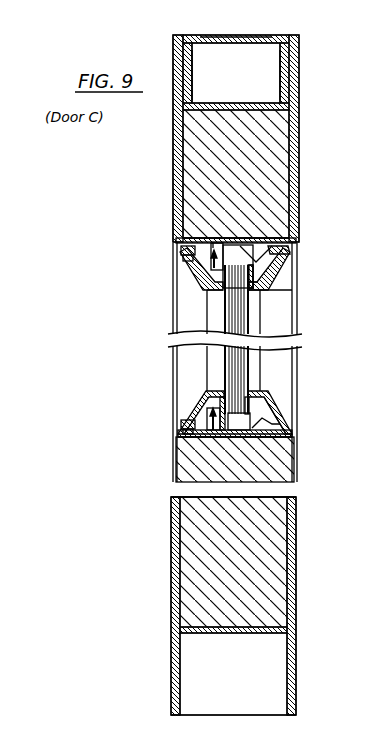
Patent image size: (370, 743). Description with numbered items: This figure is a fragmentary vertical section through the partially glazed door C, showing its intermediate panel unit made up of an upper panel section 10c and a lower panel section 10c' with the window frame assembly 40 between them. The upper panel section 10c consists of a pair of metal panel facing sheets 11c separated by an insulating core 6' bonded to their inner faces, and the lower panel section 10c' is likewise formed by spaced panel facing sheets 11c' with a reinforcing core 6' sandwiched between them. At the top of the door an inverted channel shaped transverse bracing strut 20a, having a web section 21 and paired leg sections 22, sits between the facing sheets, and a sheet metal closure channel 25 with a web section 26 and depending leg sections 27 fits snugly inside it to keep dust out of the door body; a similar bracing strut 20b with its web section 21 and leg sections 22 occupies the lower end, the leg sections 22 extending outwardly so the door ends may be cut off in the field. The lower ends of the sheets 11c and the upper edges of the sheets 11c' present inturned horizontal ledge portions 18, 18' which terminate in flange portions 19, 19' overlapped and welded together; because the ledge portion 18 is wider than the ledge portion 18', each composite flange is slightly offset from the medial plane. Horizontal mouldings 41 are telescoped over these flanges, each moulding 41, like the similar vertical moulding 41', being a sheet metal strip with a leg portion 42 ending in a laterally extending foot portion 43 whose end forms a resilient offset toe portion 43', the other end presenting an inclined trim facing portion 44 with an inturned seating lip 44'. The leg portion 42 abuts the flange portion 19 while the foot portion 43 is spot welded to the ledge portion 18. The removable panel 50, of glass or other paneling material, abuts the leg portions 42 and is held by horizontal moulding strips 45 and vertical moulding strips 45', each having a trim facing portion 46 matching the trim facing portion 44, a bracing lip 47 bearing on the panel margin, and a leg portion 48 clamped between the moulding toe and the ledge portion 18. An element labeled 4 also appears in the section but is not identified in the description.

The leg sections 22 is at (182, 36).
The closure channel 25 is at (240, 34).
The web section 26 is at (266, 35).
The depending leg sections 27 is at (190, 60).
The transverse bracing strut 20a is at (240, 102).
The web section 21 is at (278, 112).
The panel facing sheets 11c is at (225, 138).
The upper panel section 10c is at (203, 138).
The insulating core 6' is at (259, 368).
The flange portion 19' is at (168, 329).
The inturned horizontal ledge portion 18' is at (195, 341).
The inturned seating lip 44' is at (160, 339).
The inclined trim facing portion 44 is at (152, 338).
The horizontal moulding 41 is at (164, 352).
The leg portion 42 is at (210, 276).
The track 4 is at (190, 330).
The window frame assembly 40 is at (190, 352).
The removable panel 50 is at (224, 372).
The vertical moulding 41' is at (207, 407).
The inturned horizontal ledge portion 18 is at (252, 338).
The flange portion 19 is at (187, 340).
The foot portion 43 is at (240, 323).
The bracing lip 47 is at (265, 262).
The resilient offset toe portion 43' is at (289, 337).
The horizontal moulding strip 45 is at (292, 357).
The trim facing portion 46 is at (266, 272).
The vertical moulding strip 45' is at (294, 330).
The leg portion 48 is at (283, 436).
The panel facing sheets 11c' is at (235, 606).
The lower panel section 10c' is at (202, 533).
The transverse bracing strut 20b is at (213, 634).